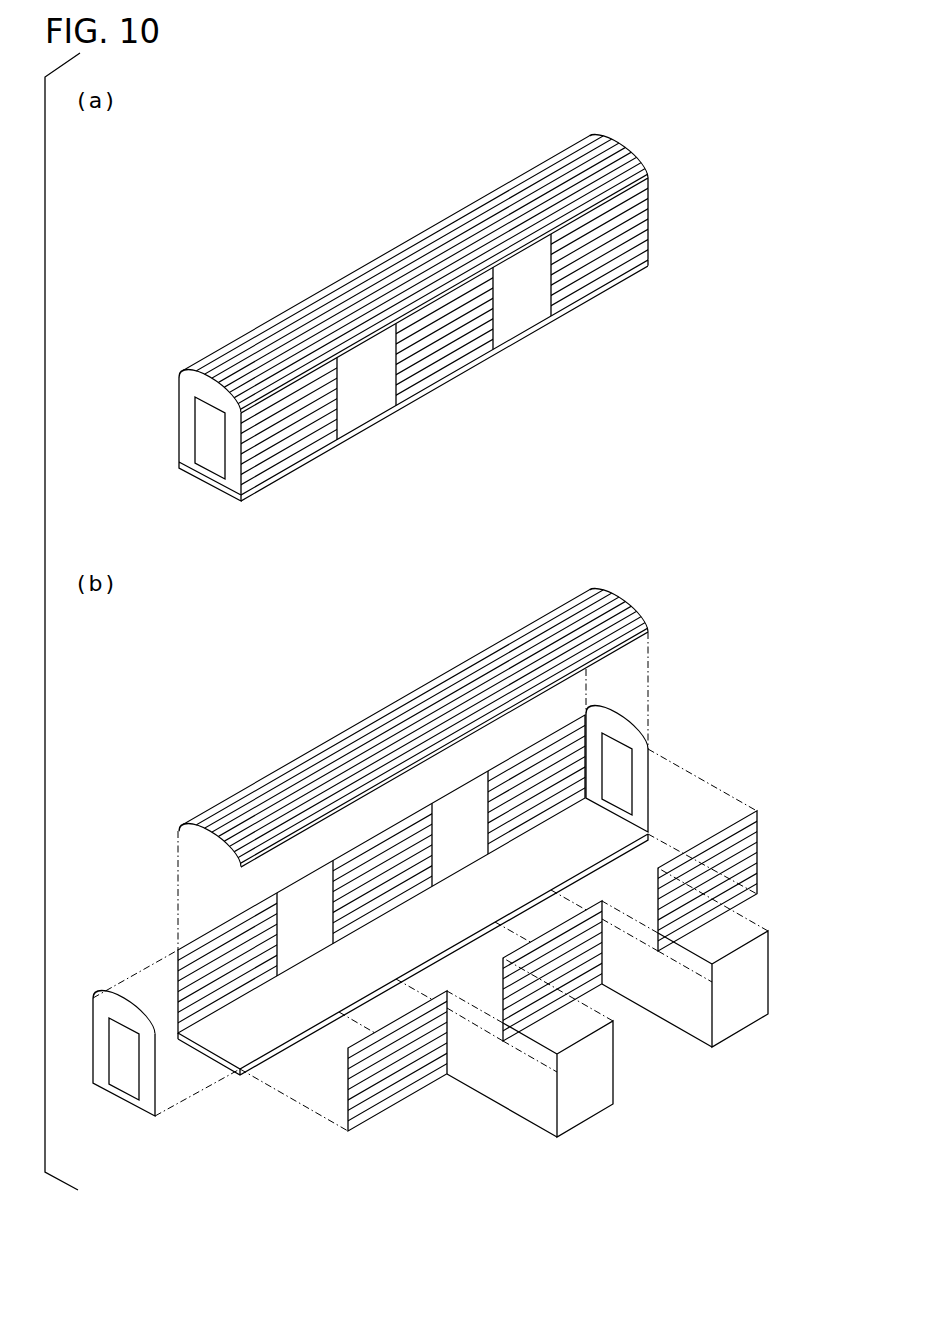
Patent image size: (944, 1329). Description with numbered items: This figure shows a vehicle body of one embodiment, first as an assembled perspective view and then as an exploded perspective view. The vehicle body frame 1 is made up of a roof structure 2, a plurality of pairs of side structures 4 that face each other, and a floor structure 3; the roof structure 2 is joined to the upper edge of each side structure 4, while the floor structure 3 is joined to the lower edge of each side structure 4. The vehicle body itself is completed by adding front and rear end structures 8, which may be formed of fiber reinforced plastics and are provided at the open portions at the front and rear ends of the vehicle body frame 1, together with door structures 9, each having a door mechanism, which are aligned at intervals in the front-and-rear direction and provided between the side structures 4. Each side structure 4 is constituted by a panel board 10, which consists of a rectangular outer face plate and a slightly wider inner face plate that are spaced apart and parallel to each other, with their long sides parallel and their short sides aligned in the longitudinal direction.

The vehicle body frame 1 is at (306, 260).
The roof structure 2 is at (445, 233).
The floor structure 3 is at (268, 487).
The side structure 4 is at (303, 436).
The end structure 8 is at (186, 410).
The door structure 9 is at (368, 403).
The panel board 10 is at (373, 1040).